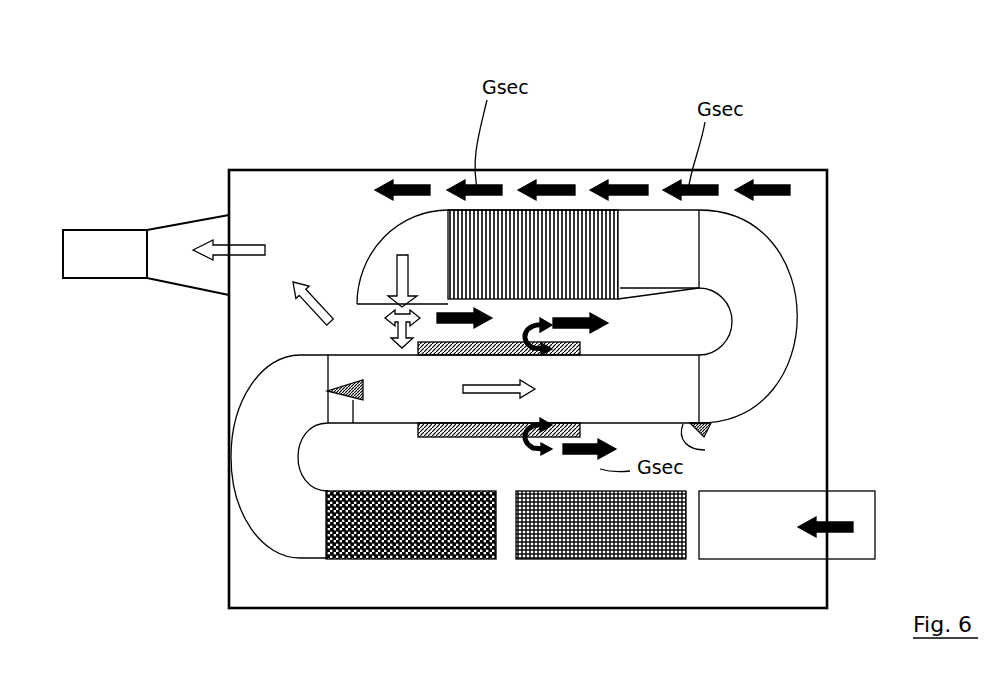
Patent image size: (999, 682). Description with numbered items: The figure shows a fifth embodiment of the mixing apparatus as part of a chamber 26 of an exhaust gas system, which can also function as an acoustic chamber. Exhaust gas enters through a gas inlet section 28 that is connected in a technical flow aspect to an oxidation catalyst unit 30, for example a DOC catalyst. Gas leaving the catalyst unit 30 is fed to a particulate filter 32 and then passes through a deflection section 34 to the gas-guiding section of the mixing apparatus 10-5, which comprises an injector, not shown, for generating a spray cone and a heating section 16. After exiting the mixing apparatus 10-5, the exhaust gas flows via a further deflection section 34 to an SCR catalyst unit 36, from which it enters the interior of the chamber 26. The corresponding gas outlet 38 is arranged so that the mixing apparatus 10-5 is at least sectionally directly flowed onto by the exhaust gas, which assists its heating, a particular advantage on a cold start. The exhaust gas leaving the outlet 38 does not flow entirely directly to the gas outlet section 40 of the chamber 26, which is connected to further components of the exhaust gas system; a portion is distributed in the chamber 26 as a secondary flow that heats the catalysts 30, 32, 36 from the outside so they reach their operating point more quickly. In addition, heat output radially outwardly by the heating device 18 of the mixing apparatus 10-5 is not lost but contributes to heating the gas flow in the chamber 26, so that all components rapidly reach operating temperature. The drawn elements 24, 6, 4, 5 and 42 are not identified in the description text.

The chamber 26 is at (826, 142).
The gas outlet section 40 is at (172, 222).
The gas inlet section 28 is at (848, 491).
The gas outlet 38 is at (374, 253).
The SCR catalyst unit 36 is at (575, 209).
The channel wall 24 is at (797, 300).
The deflection section 34 is at (248, 518).
The particulate filter 32 is at (415, 560).
The oxidation catalyst unit 30 is at (610, 560).
The heating device 18 is at (585, 352).
The heating section 16 is at (445, 437).
The gas flow 6 is at (395, 330).
The swirl flow 4 is at (527, 445).
The sensor 5 is at (353, 423).
The flap 42 is at (683, 424).
The mixing apparatus 10-5 is at (708, 432).